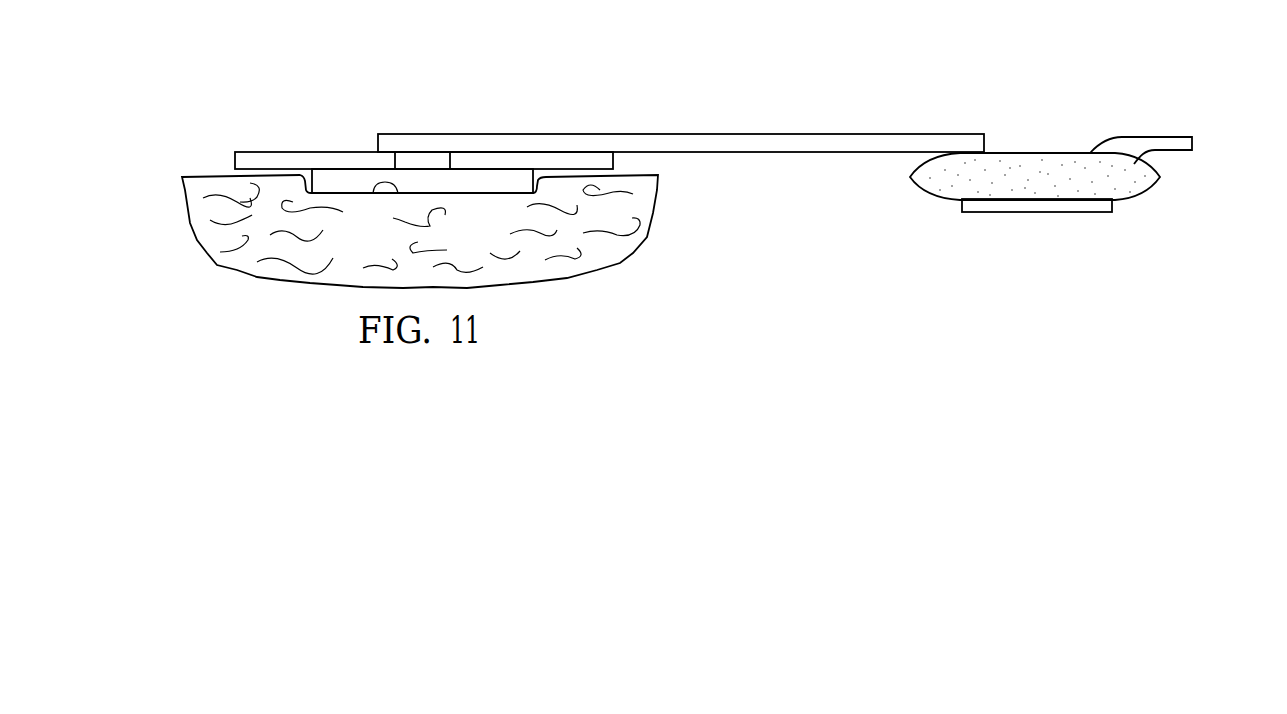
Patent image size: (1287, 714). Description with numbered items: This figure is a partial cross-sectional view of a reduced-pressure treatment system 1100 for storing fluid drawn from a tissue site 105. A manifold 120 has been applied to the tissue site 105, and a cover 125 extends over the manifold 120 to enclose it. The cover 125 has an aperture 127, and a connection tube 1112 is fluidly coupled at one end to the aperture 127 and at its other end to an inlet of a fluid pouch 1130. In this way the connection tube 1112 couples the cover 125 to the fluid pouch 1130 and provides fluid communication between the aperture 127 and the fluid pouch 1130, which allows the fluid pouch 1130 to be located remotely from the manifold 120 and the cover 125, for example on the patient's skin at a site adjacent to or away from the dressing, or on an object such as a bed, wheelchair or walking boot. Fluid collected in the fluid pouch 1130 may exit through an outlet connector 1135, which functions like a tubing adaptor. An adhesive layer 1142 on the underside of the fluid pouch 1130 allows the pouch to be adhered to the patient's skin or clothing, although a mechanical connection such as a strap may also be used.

The reduced-pressure treatment system 1100 is at (305, 102).
The connection tube 1112 is at (681, 134).
The cover 125 is at (235, 160).
The aperture 127 is at (404, 148).
The manifold 120 is at (470, 181).
The tissue site 105 is at (375, 195).
The fluid pouch 1130 is at (1160, 177).
The outlet connector 1135 is at (1150, 137).
The adhesive layer 1142 is at (1037, 213).